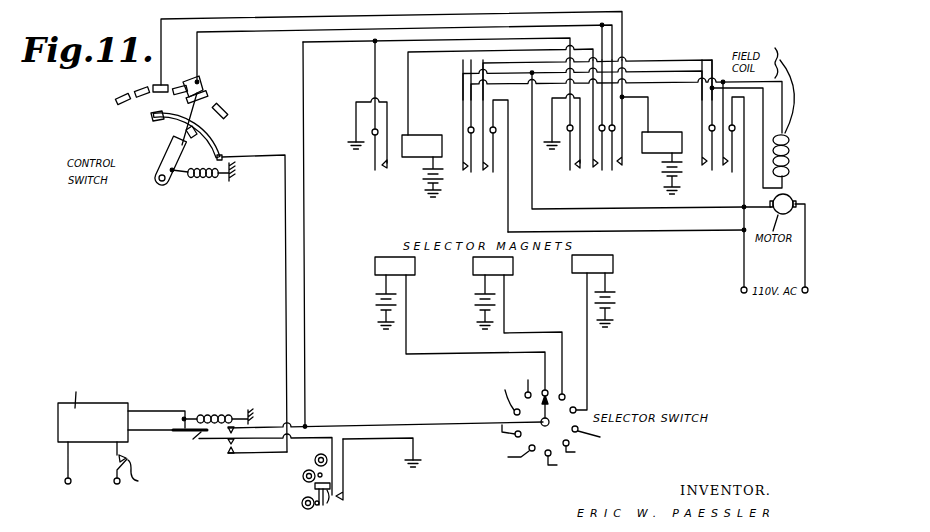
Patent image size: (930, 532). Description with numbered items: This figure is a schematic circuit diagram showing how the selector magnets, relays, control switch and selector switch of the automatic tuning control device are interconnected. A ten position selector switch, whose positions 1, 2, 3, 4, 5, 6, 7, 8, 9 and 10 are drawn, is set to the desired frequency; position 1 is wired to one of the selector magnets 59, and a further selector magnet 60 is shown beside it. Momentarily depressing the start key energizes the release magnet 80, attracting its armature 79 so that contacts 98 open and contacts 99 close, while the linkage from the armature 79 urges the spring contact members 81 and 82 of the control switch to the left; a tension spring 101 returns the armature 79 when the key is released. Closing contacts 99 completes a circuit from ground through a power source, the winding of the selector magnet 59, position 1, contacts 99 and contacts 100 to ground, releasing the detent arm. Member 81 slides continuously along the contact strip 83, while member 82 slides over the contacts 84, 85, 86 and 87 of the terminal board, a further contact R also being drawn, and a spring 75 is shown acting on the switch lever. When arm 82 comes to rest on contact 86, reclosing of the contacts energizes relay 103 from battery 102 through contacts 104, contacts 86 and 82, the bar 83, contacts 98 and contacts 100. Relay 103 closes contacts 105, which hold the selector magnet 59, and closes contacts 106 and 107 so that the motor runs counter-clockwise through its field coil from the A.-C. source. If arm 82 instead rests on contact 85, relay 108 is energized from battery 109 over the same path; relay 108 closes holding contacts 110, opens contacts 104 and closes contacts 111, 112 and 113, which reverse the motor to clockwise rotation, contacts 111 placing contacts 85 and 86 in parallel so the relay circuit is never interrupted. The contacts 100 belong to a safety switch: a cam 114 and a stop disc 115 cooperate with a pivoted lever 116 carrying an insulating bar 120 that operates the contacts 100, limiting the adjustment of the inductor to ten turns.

The spring 75 is at (203, 180).
The armature 79 is at (170, 415).
The release magnet 80 is at (58, 421).
The spring contact member 81 is at (188, 145).
The spring contact member 82 is at (184, 120).
The contact strip 83 is at (157, 121).
The contact 84 is at (142, 97).
The contact 85 is at (156, 85).
The contact 86 is at (203, 96).
The contact 87 is at (226, 117).
The reverse contact R is at (227, 110).
The contacts 98 is at (257, 447).
The contacts 99 is at (242, 433).
The contacts 100 is at (340, 499).
The tension spring 101 is at (222, 414).
The battery 102 is at (428, 176).
The relay 103 is at (425, 135).
The contacts 104 is at (601, 172).
The contacts 105 is at (382, 172).
The contacts 106 is at (472, 176).
The contacts 107 is at (488, 176).
The relay 108 is at (665, 132).
The battery 109 is at (667, 170).
The contacts 110 is at (580, 170).
The contacts 111 is at (618, 172).
The contacts 112 is at (703, 168).
The contacts 113 is at (726, 168).
The cam 114 is at (303, 477).
The stop disc 115 is at (302, 504).
The lever 116 is at (315, 461).
The insulating bar 120 is at (325, 498).
The selector magnet 59 is at (415, 275).
The selector magnet 60 is at (513, 275).
The selector switch position 1 is at (547, 386).
The selector switch position 2 is at (566, 392).
The selector switch position 3 is at (576, 405).
The selector switch position 4 is at (586, 429).
The selector switch position 5 is at (570, 445).
The selector switch position 6 is at (552, 457).
The selector switch position 7 is at (521, 455).
The selector switch position 8 is at (511, 438).
The selector switch position 9 is at (511, 405).
The selector switch position 10 is at (522, 390).